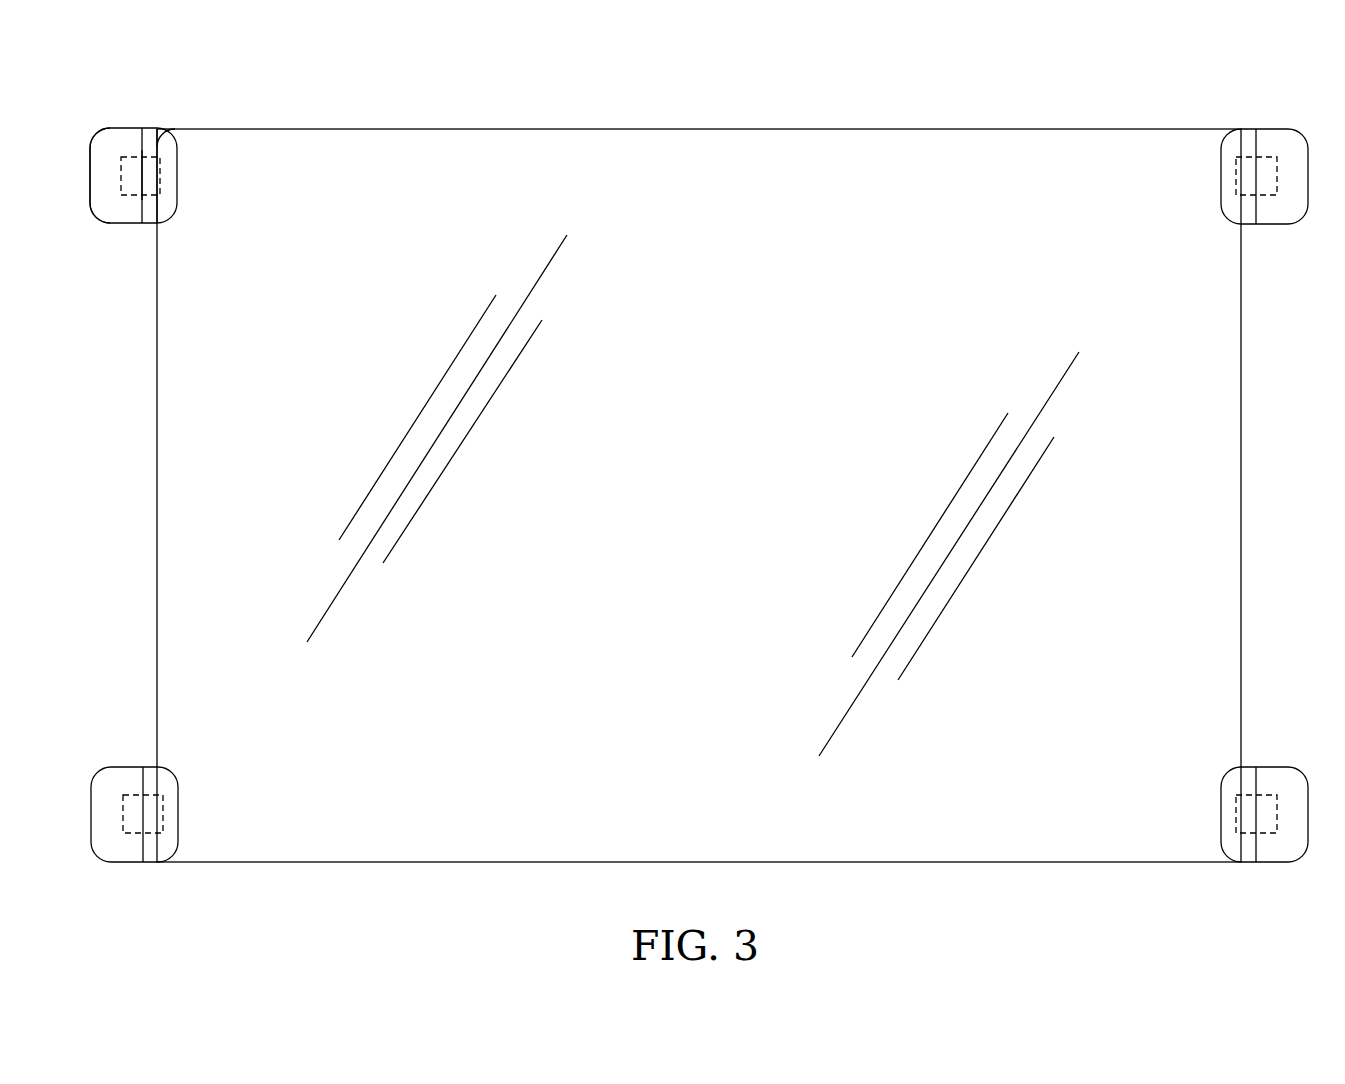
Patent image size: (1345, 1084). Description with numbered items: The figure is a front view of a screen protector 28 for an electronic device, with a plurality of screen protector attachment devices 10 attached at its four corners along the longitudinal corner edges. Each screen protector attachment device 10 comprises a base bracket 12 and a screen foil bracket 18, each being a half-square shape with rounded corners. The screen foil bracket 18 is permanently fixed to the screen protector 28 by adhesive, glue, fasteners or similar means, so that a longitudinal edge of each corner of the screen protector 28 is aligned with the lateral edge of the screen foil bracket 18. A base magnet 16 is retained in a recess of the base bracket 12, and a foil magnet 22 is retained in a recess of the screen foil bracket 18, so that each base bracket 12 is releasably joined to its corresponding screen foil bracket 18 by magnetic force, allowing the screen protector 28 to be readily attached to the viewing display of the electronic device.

The screen protector attachment device 10 is at (120, 128).
The base bracket 12 is at (102, 212).
The base magnet 16 is at (130, 178).
The screen foil bracket 18 is at (165, 137).
The foil magnet 22 is at (152, 172).
The screen protector 28 is at (737, 128).